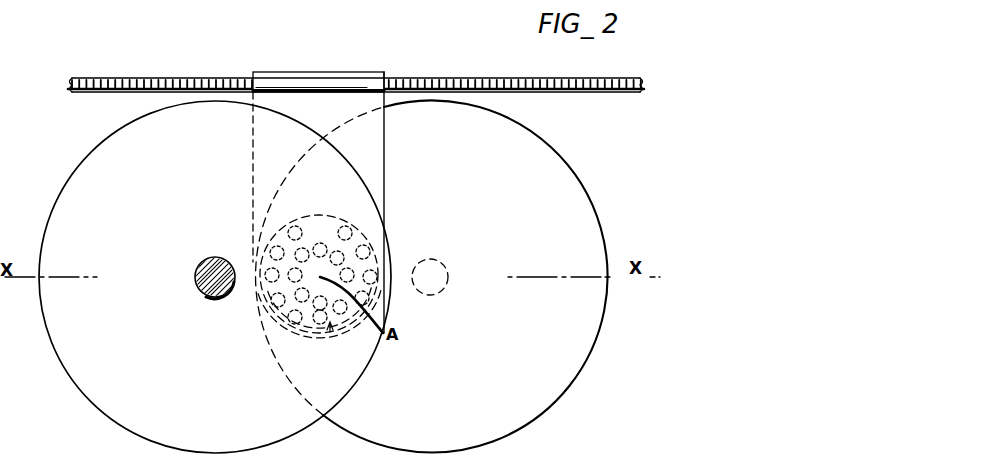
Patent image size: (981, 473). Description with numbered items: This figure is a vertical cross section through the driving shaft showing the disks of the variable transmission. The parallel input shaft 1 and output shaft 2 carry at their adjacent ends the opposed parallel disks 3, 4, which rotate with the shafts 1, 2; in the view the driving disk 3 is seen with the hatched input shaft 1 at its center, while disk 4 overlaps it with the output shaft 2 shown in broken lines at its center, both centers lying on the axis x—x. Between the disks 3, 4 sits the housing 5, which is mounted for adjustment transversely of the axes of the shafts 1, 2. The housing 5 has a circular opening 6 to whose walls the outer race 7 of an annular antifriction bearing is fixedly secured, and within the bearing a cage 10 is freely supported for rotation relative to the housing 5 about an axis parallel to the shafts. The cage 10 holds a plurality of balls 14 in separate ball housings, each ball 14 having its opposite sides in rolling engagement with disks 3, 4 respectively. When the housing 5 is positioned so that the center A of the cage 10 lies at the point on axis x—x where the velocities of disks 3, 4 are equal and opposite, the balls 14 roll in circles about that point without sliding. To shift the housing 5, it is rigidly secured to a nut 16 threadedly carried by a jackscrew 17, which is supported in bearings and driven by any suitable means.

The input shaft 1 is at (206, 297).
The output shaft 2 is at (447, 263).
The driving disk 3 is at (84, 175).
The disk 4 is at (571, 191).
The housing 5 is at (341, 58).
The circular opening 6 is at (333, 216).
The outer race 7 is at (324, 332).
The cage 10 is at (334, 357).
The ball 14 is at (298, 338).
The nut 16 is at (384, 77).
The jackscrew 17 is at (530, 81).